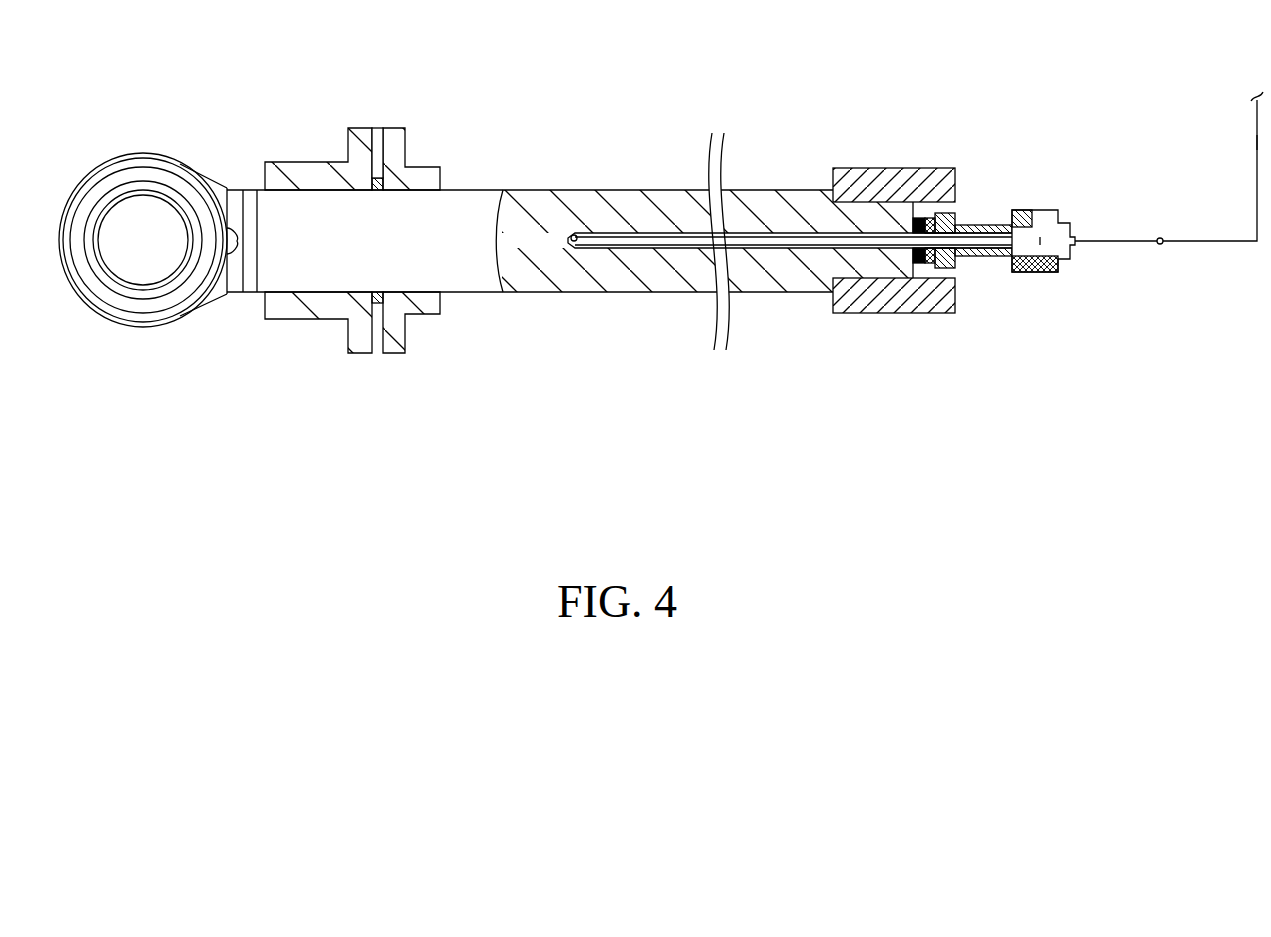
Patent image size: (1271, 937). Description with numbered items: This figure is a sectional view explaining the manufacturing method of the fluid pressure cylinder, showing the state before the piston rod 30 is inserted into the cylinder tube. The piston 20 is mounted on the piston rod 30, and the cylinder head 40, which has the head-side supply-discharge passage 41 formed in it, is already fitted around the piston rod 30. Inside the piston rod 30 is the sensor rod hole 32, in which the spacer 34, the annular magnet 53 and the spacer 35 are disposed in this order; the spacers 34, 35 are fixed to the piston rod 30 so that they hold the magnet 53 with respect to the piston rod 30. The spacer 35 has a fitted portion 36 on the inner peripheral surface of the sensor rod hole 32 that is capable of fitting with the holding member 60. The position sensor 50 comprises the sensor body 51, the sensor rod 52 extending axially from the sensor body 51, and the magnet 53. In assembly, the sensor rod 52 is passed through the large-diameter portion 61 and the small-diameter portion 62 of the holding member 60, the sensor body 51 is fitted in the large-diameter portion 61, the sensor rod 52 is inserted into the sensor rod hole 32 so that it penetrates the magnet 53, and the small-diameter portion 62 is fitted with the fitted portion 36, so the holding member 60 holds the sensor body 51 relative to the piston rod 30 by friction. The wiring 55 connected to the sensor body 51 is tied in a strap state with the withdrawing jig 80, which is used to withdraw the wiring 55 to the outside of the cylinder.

The piston 20 is at (916, 170).
The piston rod 30 is at (521, 189).
The sensor rod hole 32 is at (575, 238).
The spacer 34 is at (918, 265).
The spacer 35 is at (938, 266).
The fitted portion 36 is at (950, 262).
The cylinder head 40 is at (317, 175).
The head-side supply-discharge passage 41 is at (381, 128).
The position sensor 50 is at (1068, 258).
The sensor body 51 is at (1040, 275).
The sensor rod 52 is at (680, 243).
The annular magnet 53 is at (931, 267).
The wiring 55 is at (1140, 246).
The holding member 60 is at (1028, 208).
The large-diameter portion 61 is at (1022, 212).
The small-diameter portion 62 is at (998, 224).
The withdrawing jig 80 is at (1257, 135).